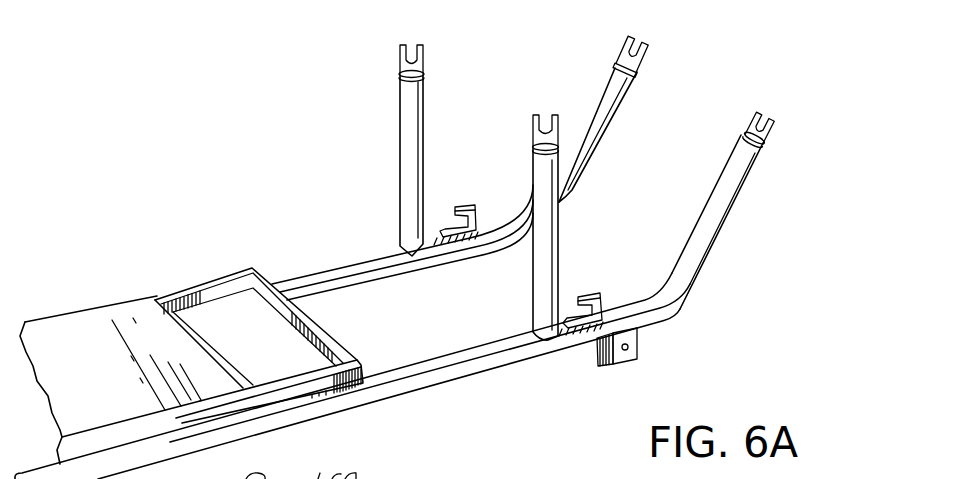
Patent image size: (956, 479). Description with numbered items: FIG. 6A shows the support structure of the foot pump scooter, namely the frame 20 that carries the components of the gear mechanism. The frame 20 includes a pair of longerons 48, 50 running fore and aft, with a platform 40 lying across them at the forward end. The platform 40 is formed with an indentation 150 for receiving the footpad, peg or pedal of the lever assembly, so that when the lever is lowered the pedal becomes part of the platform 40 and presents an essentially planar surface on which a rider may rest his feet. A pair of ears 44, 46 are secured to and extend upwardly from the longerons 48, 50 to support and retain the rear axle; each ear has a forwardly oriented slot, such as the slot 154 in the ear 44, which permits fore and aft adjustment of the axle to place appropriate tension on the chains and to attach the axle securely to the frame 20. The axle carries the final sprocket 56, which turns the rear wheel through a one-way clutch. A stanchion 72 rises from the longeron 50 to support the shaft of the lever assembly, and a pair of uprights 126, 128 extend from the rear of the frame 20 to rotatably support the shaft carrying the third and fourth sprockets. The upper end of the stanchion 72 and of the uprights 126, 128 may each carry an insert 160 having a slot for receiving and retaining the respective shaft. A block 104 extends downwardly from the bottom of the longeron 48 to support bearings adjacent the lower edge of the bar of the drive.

The frame 20 is at (485, 435).
The platform 40 is at (86, 328).
The ear 44 is at (598, 295).
The ear 46 is at (473, 207).
The longeron 48 is at (407, 393).
The longeron 50 is at (313, 276).
The final sprocket 56 is at (440, 234).
The stanchion 72 is at (400, 186).
The block 104 is at (640, 345).
The upright 126 is at (733, 201).
The upright 128 is at (610, 107).
The indentation 150 is at (197, 298).
The slot 154 is at (582, 345).
The insert 160 is at (424, 71).